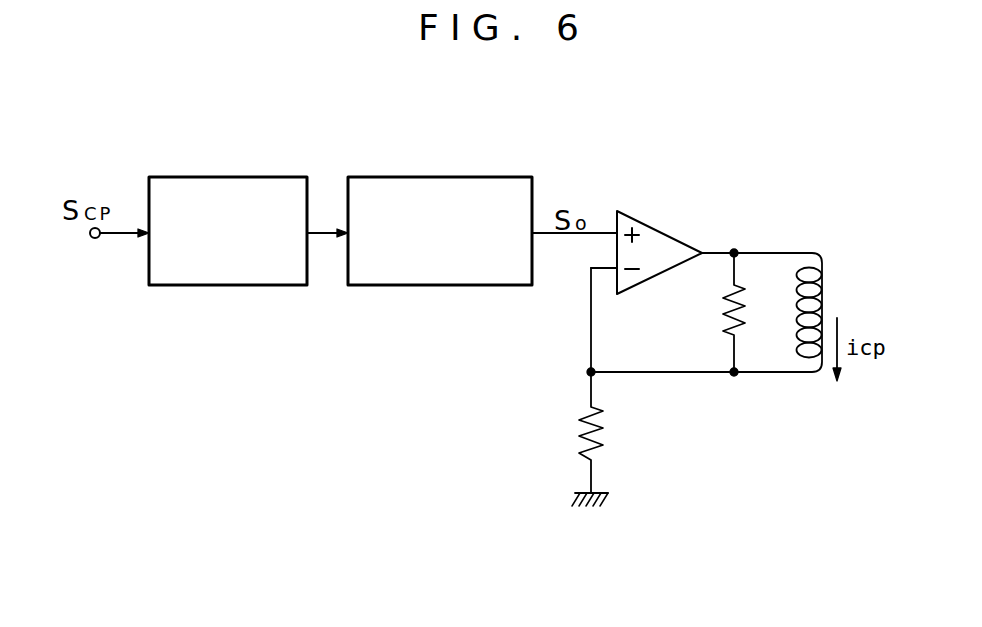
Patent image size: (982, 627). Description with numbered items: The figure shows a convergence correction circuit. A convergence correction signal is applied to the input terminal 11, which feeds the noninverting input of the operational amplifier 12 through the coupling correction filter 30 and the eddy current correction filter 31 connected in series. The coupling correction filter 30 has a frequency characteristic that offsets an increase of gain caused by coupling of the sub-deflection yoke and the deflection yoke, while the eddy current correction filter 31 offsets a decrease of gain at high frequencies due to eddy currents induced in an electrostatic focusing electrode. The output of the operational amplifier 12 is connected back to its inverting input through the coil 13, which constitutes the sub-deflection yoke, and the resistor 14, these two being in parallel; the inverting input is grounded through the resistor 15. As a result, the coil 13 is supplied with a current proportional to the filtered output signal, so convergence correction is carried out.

The input terminal 11 is at (93, 238).
The coupling correction filter 30 is at (213, 177).
The eddy current correction filter 31 is at (428, 177).
The operational amplifier 12 is at (657, 231).
The resistor 14 is at (722, 312).
The coil 13 is at (822, 295).
The resistor 15 is at (578, 443).